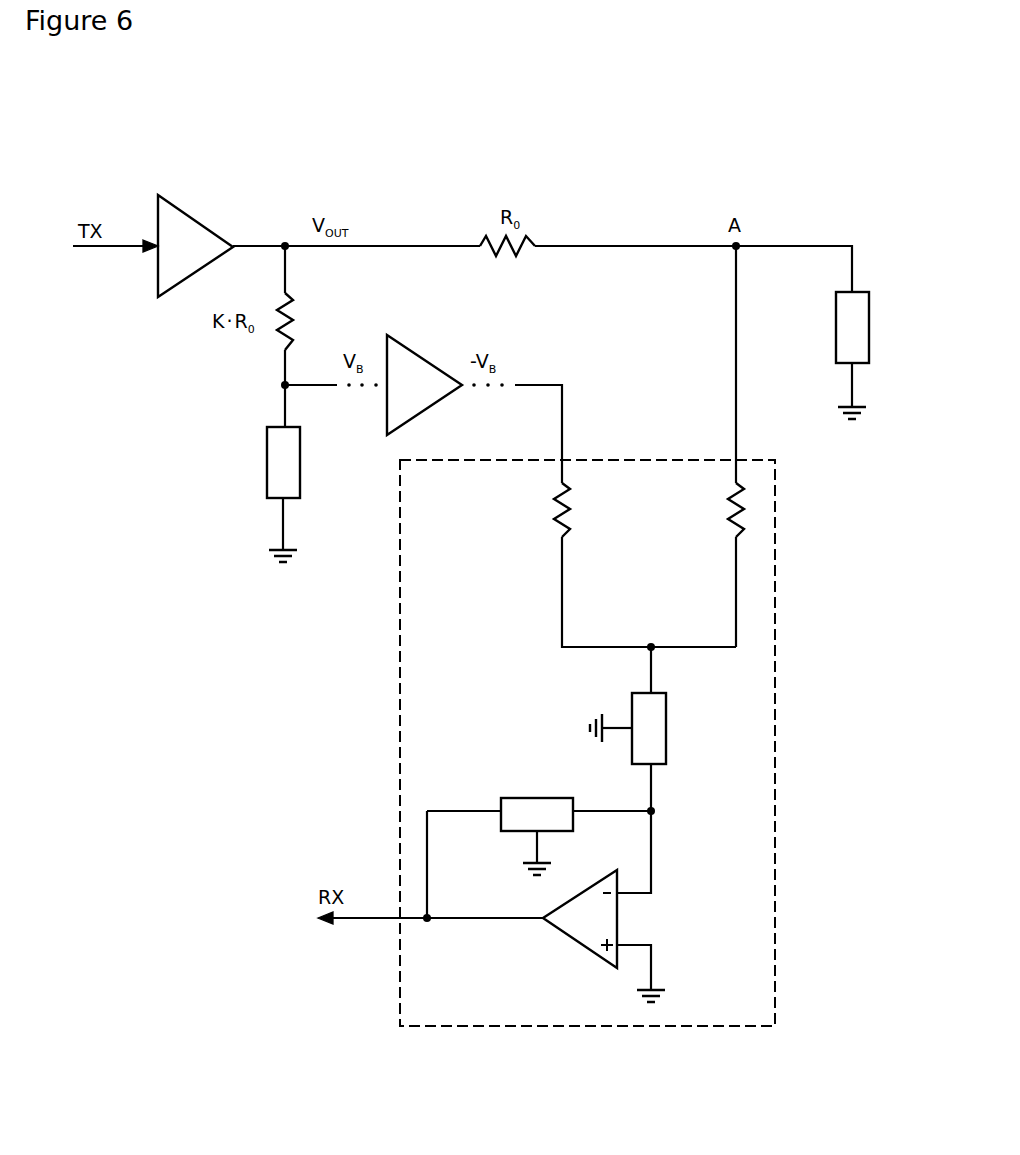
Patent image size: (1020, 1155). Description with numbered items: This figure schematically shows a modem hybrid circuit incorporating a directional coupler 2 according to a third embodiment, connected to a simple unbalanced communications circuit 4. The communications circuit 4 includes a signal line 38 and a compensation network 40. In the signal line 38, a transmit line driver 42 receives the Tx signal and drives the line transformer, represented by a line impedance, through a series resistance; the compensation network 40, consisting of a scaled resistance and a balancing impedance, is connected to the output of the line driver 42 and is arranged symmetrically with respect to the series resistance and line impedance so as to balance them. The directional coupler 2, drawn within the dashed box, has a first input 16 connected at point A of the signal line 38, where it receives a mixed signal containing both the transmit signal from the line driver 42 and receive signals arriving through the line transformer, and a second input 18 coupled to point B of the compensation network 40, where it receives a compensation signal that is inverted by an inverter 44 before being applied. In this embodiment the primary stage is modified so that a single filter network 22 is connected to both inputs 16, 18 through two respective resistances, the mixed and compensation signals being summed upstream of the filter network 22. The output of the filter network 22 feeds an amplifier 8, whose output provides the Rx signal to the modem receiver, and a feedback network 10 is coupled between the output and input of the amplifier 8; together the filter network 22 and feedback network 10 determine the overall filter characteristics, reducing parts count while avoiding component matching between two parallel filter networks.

The transmit line driver 42 is at (185, 208).
The signal line 38 is at (630, 245).
The communications circuit 4 is at (825, 187).
The inverter 44 is at (400, 344).
The second input 18 is at (556, 430).
The first input 16 is at (731, 430).
The compensation network 40 is at (196, 395).
The directional coupler circuit 2 is at (777, 615).
The filter network 22 is at (666, 742).
The feedback network 10 is at (527, 798).
The amplifier 8 is at (565, 940).